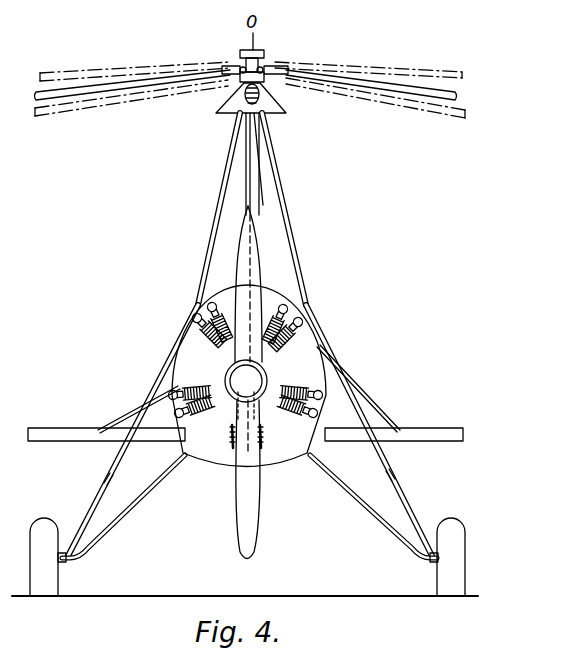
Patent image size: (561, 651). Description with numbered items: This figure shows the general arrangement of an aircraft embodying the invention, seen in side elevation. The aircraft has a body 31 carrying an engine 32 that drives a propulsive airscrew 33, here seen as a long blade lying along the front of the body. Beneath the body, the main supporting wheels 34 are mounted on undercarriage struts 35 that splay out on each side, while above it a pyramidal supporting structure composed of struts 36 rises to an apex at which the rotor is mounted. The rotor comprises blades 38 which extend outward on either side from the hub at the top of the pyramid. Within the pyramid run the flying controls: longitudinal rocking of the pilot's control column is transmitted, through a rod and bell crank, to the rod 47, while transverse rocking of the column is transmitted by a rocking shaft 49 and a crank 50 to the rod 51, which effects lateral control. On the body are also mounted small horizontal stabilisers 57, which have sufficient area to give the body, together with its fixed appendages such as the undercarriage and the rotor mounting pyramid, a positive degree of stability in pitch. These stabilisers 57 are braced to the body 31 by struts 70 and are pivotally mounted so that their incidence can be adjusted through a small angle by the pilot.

The body 31 is at (283, 468).
The engine 32 is at (302, 326).
The propulsive airscrew 33 is at (243, 526).
The main supporting wheels 34 is at (50, 588).
The undercarriage struts 35 is at (128, 508).
The struts 36 is at (231, 161).
The blades 38 is at (107, 82).
The rod 47 is at (243, 198).
The rocking shaft 49 is at (236, 436).
The crank 50 is at (258, 428).
The rod 51 is at (263, 215).
The horizontal stabilisers 57 is at (80, 428).
The struts 70 is at (140, 393).